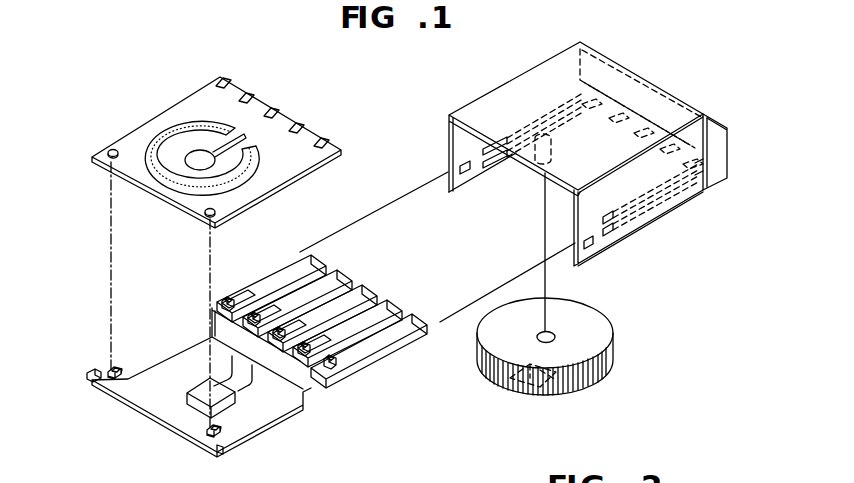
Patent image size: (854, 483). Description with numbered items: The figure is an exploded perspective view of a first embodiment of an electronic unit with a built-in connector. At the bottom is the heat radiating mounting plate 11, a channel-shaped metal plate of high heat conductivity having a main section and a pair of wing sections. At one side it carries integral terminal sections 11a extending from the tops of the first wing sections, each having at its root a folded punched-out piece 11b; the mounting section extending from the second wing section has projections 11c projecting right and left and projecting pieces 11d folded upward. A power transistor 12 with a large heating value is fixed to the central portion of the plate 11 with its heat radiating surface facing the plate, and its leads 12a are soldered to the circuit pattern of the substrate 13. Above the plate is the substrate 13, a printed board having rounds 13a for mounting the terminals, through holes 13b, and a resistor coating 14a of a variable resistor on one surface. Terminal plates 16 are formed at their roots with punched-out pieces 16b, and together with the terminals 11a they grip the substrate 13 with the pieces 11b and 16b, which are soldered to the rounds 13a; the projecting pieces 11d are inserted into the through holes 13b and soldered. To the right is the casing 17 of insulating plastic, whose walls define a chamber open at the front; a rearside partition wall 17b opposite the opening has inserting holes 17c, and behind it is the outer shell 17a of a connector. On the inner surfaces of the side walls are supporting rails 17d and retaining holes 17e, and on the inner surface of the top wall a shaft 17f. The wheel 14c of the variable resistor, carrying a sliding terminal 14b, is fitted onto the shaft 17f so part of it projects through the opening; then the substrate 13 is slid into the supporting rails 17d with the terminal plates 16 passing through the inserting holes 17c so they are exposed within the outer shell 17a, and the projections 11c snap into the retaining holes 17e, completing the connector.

The heat radiating mounting plate 11 is at (265, 420).
The terminal section 11a is at (413, 323).
The punched-out piece 11b is at (338, 360).
The projections 11c is at (100, 372).
The projecting pieces 11d is at (90, 383).
The power transistor 12 is at (205, 385).
The lead 12a is at (258, 380).
The substrate 13 is at (145, 133).
The rounds 13a is at (305, 128).
The through holes 13b is at (102, 158).
The resistor coating 14a is at (178, 128).
The sliding terminal 14b is at (565, 392).
The wheel 14c is at (595, 336).
The terminal plates 16 is at (380, 300).
The punched-out pieces 16b is at (310, 332).
The casing 17 is at (601, 44).
The outer shell 17a is at (722, 150).
The rearside wall 17b is at (652, 118).
The inserting holes 17c is at (620, 112).
The supporting rails 17d is at (498, 170).
The retaining holes 17e is at (465, 176).
The shaft 17f is at (540, 138).